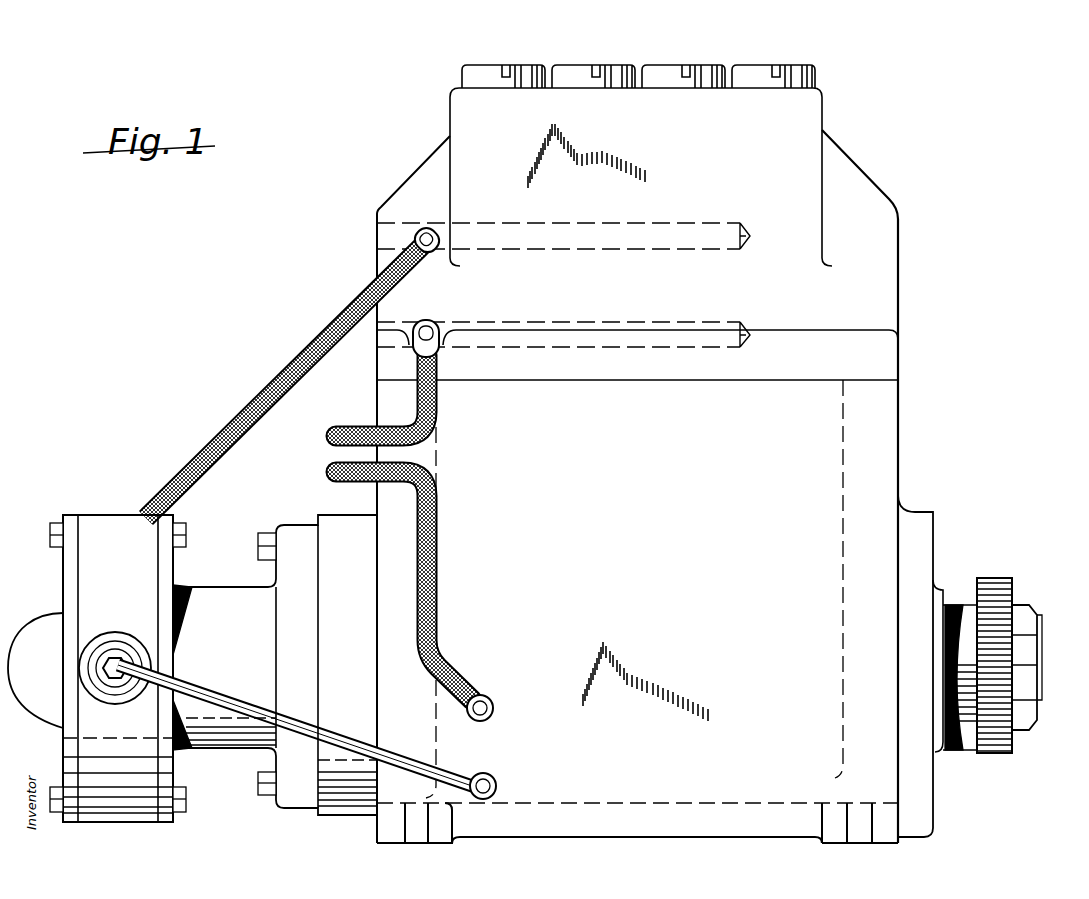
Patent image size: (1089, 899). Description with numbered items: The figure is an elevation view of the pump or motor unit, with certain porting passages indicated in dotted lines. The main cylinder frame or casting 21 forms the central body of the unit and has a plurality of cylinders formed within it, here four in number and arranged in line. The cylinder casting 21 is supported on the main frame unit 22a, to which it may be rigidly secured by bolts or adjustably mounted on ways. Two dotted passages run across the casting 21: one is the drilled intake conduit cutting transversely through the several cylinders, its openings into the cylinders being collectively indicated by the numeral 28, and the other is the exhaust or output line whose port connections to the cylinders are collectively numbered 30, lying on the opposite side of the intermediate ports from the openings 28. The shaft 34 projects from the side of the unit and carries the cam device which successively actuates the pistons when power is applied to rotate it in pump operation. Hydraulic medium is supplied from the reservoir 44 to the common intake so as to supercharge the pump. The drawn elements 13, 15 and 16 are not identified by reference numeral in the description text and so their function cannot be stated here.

The mounting bracket 13 is at (93, 531).
The high tension terminal 15 is at (412, 240).
The low tension terminal 16 is at (426, 336).
The main cylinder frame 21 is at (885, 292).
The main frame unit 22a is at (886, 462).
The intake port openings 28 is at (486, 224).
The exhaust port connections 30 is at (534, 305).
The shaft 34 is at (1040, 641).
The reservoir 44 is at (790, 780).